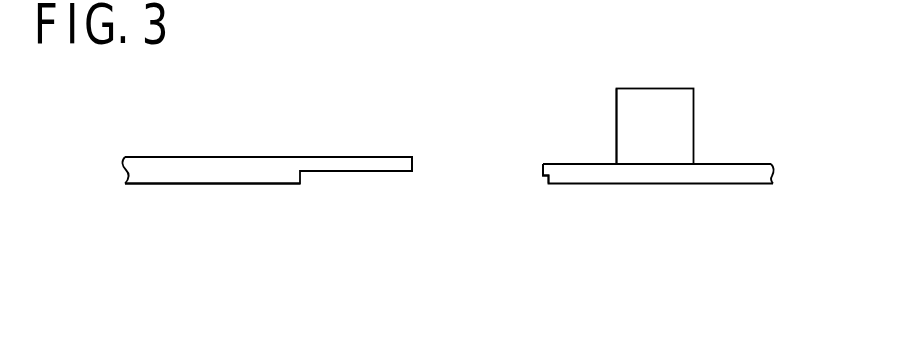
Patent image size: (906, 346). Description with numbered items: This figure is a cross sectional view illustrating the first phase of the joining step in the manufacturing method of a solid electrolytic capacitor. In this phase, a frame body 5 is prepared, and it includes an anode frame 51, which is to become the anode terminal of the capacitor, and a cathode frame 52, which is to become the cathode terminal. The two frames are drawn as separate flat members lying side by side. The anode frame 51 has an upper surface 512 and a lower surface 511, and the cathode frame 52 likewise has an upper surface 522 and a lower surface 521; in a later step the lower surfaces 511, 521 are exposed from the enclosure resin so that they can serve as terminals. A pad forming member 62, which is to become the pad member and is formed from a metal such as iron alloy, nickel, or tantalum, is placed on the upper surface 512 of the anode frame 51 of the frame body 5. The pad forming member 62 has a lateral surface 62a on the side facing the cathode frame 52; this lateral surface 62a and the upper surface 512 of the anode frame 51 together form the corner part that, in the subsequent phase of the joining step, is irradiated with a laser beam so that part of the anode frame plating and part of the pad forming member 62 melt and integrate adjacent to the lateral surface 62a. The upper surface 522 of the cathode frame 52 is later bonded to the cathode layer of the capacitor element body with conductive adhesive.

The frame body 5 is at (737, 185).
The anode frame 51 is at (668, 172).
The lower surface 511 is at (564, 184).
The upper surface 512 is at (593, 164).
The cathode frame 52 is at (162, 172).
The lower surface 521 is at (233, 184).
The upper surface 522 is at (268, 157).
The pad forming member 62 is at (667, 129).
The lateral surface 62a is at (616, 113).